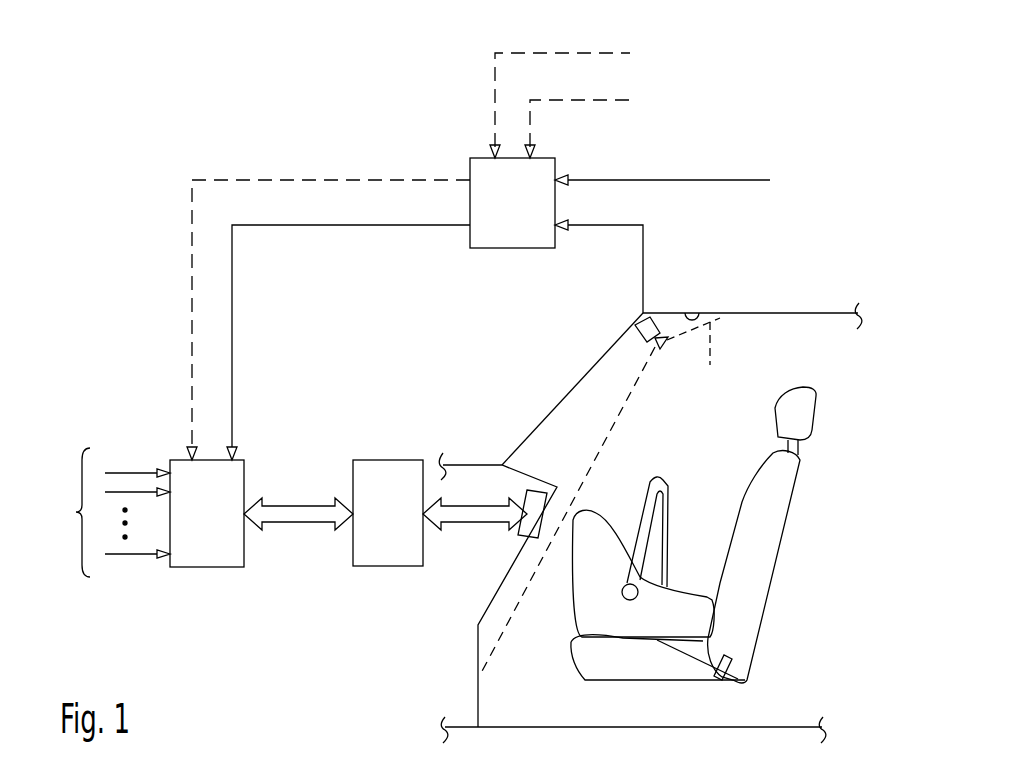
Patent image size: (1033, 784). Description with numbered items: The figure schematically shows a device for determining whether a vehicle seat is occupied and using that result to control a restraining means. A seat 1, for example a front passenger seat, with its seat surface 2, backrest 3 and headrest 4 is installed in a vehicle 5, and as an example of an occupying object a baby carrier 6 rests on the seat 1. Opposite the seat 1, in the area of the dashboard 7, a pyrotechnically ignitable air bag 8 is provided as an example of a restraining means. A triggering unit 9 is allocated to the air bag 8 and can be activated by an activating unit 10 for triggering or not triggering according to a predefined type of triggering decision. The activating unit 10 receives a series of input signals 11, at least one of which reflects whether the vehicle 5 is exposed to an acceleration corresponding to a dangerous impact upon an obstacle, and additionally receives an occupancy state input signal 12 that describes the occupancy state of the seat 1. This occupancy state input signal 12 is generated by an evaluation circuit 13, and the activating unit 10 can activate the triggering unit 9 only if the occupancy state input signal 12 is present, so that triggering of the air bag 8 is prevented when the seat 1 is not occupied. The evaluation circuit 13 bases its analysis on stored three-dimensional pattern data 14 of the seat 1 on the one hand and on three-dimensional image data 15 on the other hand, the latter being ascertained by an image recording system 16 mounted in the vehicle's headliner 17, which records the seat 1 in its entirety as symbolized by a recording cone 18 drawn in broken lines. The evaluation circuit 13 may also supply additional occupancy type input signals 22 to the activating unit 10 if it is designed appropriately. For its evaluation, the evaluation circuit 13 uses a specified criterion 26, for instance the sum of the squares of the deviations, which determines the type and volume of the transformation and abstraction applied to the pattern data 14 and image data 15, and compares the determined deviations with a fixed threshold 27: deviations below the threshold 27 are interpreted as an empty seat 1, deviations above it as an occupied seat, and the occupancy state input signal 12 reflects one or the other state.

The seat 1 is at (818, 560).
The seat surface 2 is at (578, 637).
The backrest 3 is at (742, 502).
The headrest 4 is at (815, 390).
The vehicle 5 is at (798, 711).
The baby carrier 6 is at (603, 511).
The dashboard 7 is at (530, 471).
The air bag 8 is at (517, 538).
The triggering unit 9 is at (393, 568).
The activating unit 10 is at (215, 568).
The input signals 11 is at (107, 512).
The occupancy state input signal 12 is at (232, 330).
The evaluation circuit 13 is at (497, 250).
The 3D pattern data 14 is at (683, 180).
The 3D image data 15 is at (645, 242).
The image recording system 16 is at (638, 342).
The headliner 17 is at (705, 318).
The recording cone 18 is at (693, 356).
The occupancy type input signals 22 is at (270, 178).
The criterion 26 is at (622, 52).
The threshold 27 is at (622, 100).